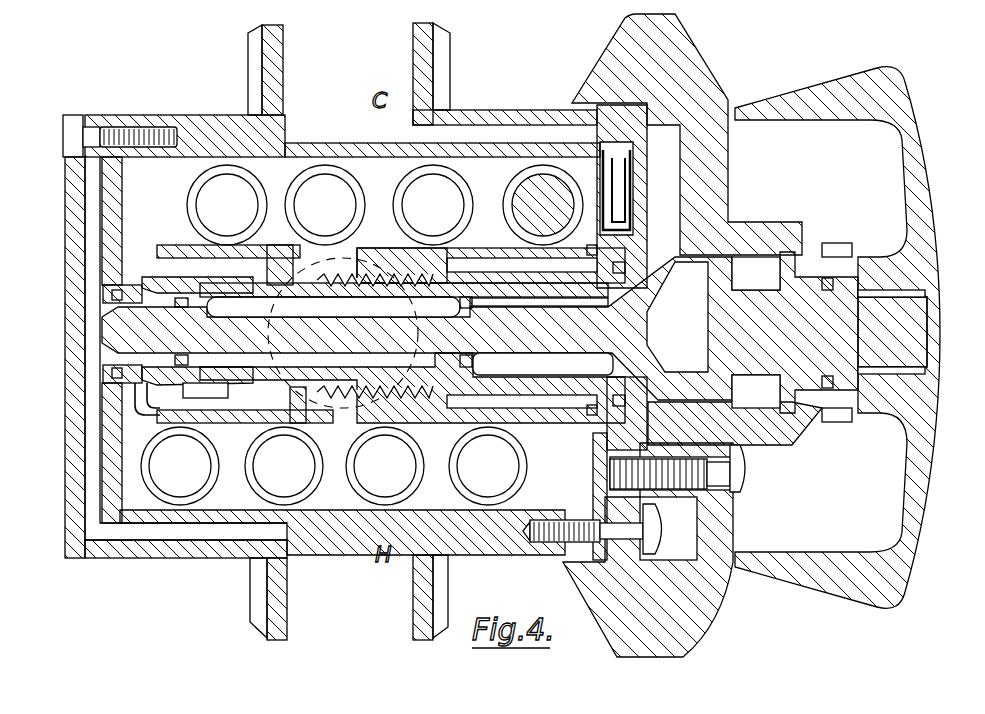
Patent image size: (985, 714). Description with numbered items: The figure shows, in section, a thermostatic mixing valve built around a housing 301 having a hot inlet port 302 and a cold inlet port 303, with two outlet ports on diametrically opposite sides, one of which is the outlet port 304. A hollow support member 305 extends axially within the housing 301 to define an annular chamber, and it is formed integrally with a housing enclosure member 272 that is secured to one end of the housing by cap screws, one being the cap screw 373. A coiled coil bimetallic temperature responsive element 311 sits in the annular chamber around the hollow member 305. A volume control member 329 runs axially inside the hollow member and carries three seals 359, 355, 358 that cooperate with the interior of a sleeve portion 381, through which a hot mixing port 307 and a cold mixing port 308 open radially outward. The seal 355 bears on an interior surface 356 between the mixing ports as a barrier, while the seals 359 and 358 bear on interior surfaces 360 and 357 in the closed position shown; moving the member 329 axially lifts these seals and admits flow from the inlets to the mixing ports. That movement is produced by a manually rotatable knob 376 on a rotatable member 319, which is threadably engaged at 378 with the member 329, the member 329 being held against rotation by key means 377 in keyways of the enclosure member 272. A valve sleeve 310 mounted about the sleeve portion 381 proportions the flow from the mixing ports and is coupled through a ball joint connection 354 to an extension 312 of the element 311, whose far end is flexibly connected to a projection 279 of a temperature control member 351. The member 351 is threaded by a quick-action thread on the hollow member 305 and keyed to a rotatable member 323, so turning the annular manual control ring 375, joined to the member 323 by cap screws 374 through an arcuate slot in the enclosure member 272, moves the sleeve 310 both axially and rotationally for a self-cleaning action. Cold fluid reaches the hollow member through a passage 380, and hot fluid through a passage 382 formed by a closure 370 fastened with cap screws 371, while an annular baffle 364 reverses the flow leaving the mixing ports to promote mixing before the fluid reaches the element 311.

The housing 301 is at (186, 117).
The hot inlet port 302 is at (290, 581).
The cold inlet port 303 is at (282, 125).
The outlet port 304 is at (315, 405).
The hollow support member 305 is at (596, 290).
The hot mixing port 307 is at (130, 390).
The cold mixing port 308 is at (258, 384).
The valve sleeve 310 is at (176, 428).
The temperature responsive element 311 is at (283, 187).
The extension of the temperature responsive element 312 is at (140, 416).
The rotatable member 319 is at (907, 333).
The rotatable member 323 is at (596, 443).
The volume control member 329 is at (563, 355).
The temperature control member 351 is at (392, 251).
The ball joint connection 354 is at (220, 398).
The seal 355 is at (110, 340).
The interior surface 356 is at (258, 290).
The interior surface 357 is at (440, 424).
The seal 358 is at (474, 303).
The seal 359 is at (120, 364).
The interior surface 360 is at (103, 302).
The annular baffle 364 is at (197, 256).
The closure 370 is at (68, 445).
The cap screws 371 is at (140, 128).
The cap screw 373 is at (560, 540).
The cap screws 374 is at (744, 470).
The annular manual control ring 375 is at (720, 522).
The manually rotatable knob 376 is at (923, 408).
The key means 377 is at (693, 264).
The threaded engagement 378 is at (733, 382).
The passage 380 is at (504, 128).
The sleeve portion 381 is at (352, 298).
The passage 382 is at (100, 530).
The housing enclosure member 272 is at (682, 190).
The projection 279 is at (527, 196).